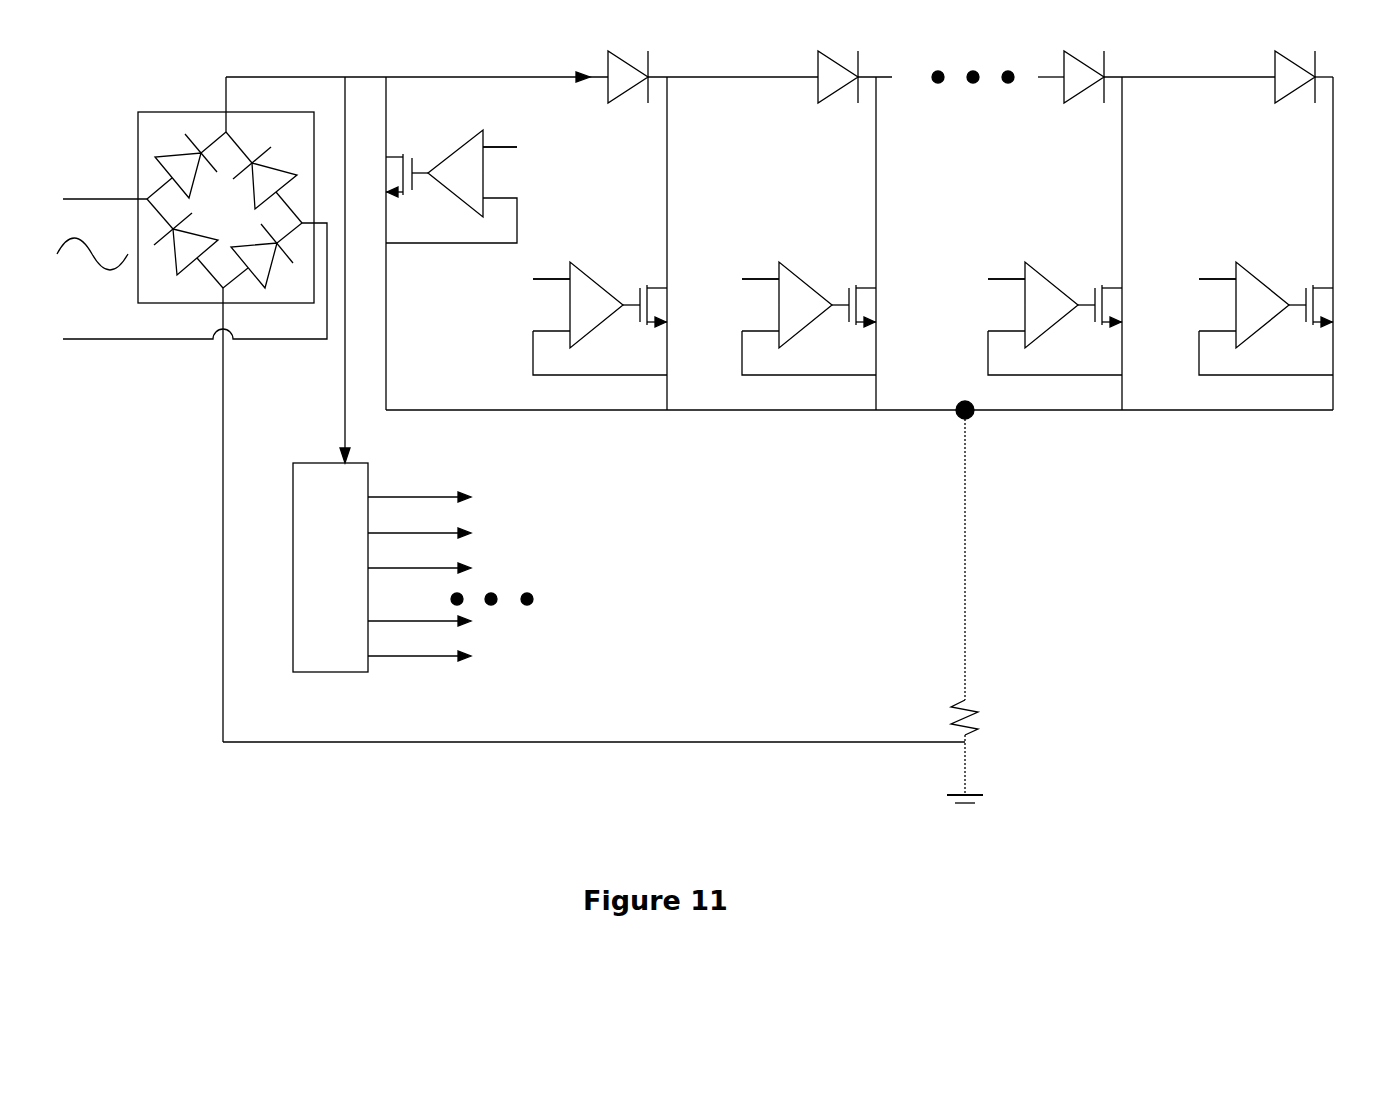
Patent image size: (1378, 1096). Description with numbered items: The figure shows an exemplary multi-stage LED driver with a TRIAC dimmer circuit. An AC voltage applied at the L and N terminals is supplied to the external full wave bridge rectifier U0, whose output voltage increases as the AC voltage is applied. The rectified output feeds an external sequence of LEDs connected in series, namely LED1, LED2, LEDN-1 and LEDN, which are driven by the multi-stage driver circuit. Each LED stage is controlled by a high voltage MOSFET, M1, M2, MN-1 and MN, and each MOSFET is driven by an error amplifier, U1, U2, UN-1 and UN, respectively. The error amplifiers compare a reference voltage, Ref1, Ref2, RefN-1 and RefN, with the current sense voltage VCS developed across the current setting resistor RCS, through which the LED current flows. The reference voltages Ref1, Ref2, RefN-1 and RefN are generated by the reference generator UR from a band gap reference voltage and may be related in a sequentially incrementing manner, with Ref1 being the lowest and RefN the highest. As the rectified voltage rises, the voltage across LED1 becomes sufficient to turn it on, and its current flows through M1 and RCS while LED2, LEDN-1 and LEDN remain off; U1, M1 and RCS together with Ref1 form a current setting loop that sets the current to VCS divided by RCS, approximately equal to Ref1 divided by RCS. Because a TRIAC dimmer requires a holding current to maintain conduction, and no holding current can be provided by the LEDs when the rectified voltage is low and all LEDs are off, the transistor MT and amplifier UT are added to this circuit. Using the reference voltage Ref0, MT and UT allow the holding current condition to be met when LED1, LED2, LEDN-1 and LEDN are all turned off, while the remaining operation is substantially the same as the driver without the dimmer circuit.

The full wave bridge rectifier U0 is at (226, 409).
The AC line input L is at (105, 182).
The AC neutral input N is at (195, 281).
The transistor MT is at (391, 175).
The amplifier UT is at (451, 186).
The reference voltage Ref0 is at (510, 133).
The element LED1 is at (619, 100).
The element LED2 is at (829, 100).
The element LEDN-1 is at (1071, 100).
The element LEDN is at (1284, 100).
The error amplifier U1 is at (600, 318).
The error amplifier U2 is at (809, 318).
The error amplifier UN-1 is at (1055, 318).
The error amplifier UN is at (1266, 318).
The high voltage MOSFET M1 is at (673, 306).
The high voltage MOSFET M2 is at (882, 306).
The high voltage MOSFET MN-1 is at (1136, 306).
The high voltage MOSFET MN is at (1340, 306).
The reference voltage Ref1 is at (539, 265).
The reference voltage Ref2 is at (748, 265).
The reference voltage RefN-1 is at (987, 265).
The reference voltage RefN is at (1202, 265).
The reference voltage generator UR is at (413, 384).
The current sense voltage VCS is at (987, 550).
The current setting resistor RCS is at (624, 751).